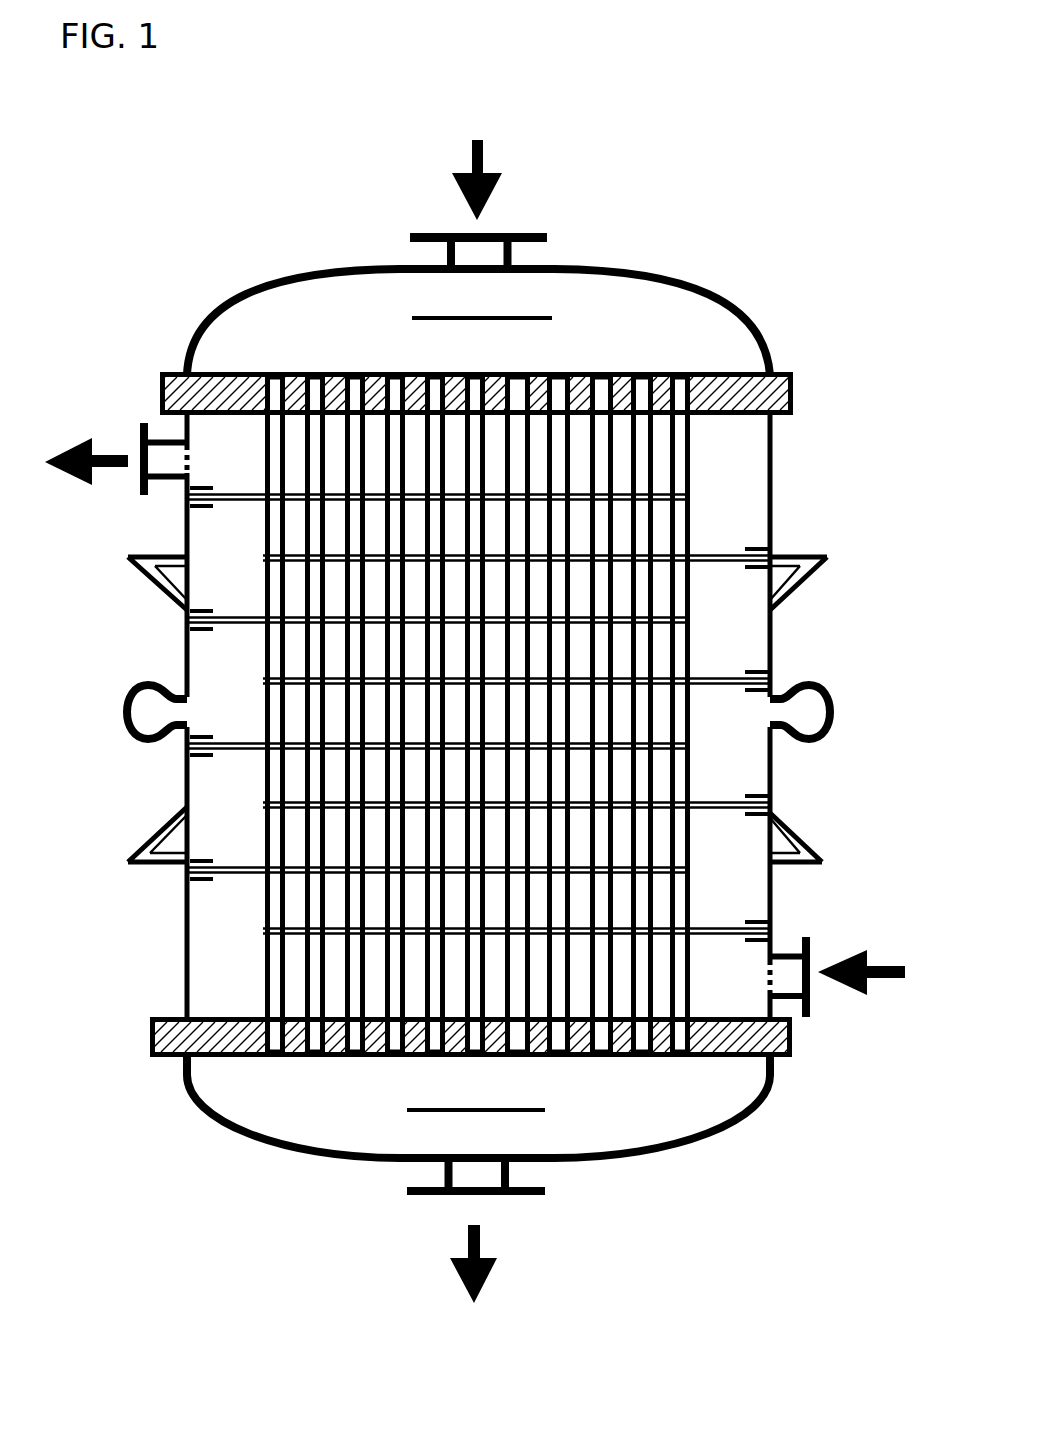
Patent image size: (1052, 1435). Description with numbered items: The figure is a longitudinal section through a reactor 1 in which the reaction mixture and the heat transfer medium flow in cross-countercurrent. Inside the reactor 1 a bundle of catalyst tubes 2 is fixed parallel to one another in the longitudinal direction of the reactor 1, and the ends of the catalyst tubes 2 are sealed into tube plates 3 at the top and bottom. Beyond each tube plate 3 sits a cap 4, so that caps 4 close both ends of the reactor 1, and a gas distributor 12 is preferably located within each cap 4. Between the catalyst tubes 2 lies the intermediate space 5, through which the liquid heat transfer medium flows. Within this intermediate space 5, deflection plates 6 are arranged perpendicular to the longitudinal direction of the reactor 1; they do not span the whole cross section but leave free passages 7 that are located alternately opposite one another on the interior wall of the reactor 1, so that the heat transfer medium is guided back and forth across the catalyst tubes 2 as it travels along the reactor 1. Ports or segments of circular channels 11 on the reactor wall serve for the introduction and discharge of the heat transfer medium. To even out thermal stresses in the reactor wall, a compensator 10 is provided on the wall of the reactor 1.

The reactor 1 is at (252, 265).
The catalyst tubes 2 is at (645, 412).
The tube plates 3 is at (795, 375).
The caps 4 is at (642, 303).
The intermediate space 5 is at (295, 895).
The deflection plates 6 is at (320, 800).
The free passages 7 is at (232, 648).
The compensator 10 is at (825, 698).
The ports or segments of circular channels 11 is at (173, 482).
The gas distributors 12 is at (523, 303).